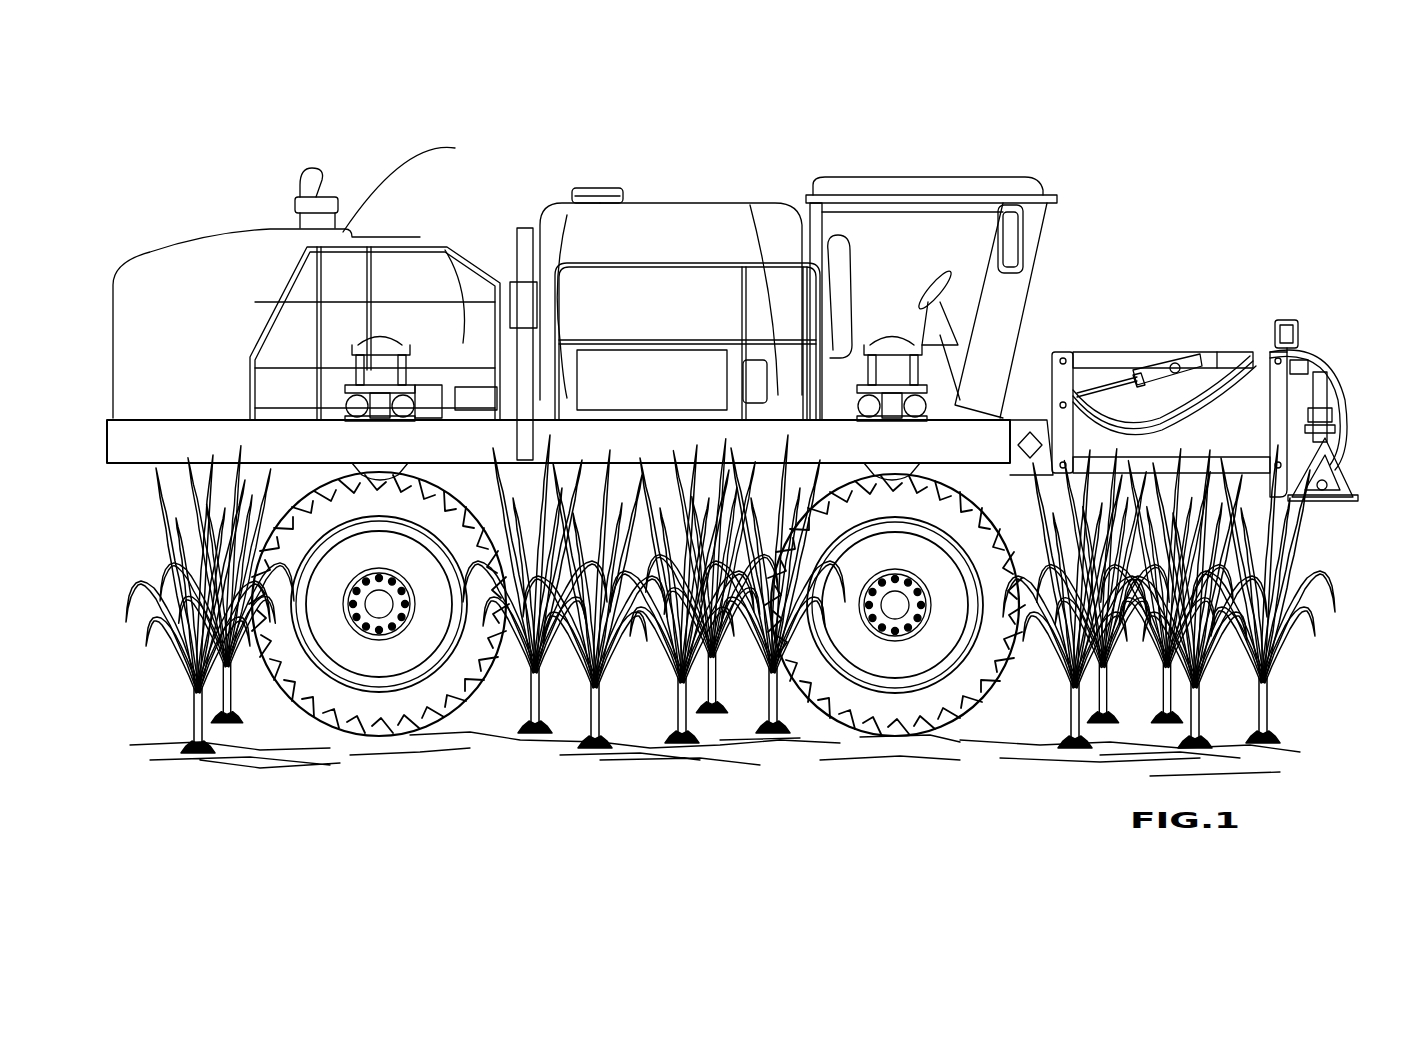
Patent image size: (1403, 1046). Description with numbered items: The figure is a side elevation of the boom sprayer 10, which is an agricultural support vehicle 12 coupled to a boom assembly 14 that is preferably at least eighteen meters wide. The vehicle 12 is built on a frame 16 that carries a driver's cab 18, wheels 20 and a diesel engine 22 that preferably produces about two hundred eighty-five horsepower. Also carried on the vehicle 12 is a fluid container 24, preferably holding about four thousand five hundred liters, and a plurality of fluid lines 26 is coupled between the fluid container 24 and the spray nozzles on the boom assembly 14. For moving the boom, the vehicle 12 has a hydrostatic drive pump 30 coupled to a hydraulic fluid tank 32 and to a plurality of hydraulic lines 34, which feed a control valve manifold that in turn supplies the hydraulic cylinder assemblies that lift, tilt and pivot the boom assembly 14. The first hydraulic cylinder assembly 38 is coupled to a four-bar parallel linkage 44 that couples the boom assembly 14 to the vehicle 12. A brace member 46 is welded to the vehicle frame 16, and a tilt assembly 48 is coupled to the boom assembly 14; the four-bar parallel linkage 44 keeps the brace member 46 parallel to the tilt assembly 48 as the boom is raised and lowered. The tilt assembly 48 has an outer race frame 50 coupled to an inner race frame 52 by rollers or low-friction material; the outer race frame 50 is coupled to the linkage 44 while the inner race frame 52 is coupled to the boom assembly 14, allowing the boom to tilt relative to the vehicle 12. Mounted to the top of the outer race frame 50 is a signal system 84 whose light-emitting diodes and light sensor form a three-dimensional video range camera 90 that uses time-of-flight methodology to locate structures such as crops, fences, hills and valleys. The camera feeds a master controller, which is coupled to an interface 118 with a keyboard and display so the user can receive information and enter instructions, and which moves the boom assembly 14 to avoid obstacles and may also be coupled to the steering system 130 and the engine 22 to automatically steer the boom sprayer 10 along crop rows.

The boom sprayer 10 is at (1058, 178).
The agricultural support vehicle 12 is at (848, 152).
The boom assembly 14 is at (1277, 428).
The frame 16 is at (135, 440).
The driver's cab 18 is at (840, 180).
The wheels 20 is at (405, 745).
The diesel engine 22 is at (570, 213).
The fluid container 24 is at (557, 212).
The fluid lines 26 is at (775, 210).
The hydrostatic drive pump 30 is at (452, 232).
The hydraulic fluid tank 32 is at (685, 360).
The hydraulic lines 34 is at (562, 218).
The first hydraulic cylinder assembly 38 is at (1133, 370).
The four-bar parallel linkage 44 is at (1120, 352).
The brace member 46 is at (940, 420).
The tilt assembly 48 is at (1267, 322).
The outer race frame 50 is at (1271, 390).
The inner race frame 52 is at (1290, 402).
The signal system 84 is at (1287, 292).
The 3D video range camera 90 is at (1287, 327).
The interface 118 is at (950, 335).
The steering system 130 is at (960, 330).